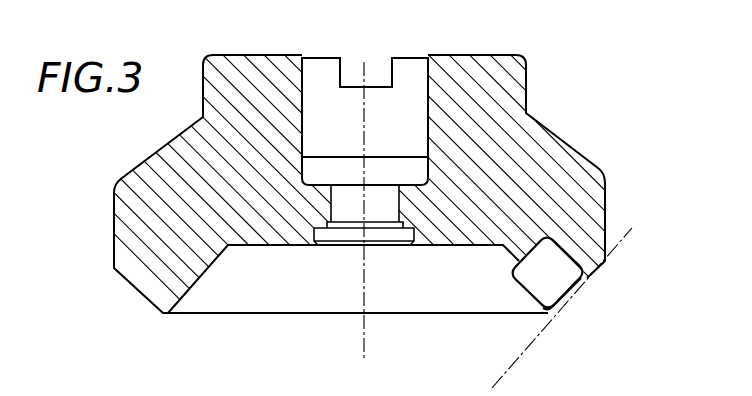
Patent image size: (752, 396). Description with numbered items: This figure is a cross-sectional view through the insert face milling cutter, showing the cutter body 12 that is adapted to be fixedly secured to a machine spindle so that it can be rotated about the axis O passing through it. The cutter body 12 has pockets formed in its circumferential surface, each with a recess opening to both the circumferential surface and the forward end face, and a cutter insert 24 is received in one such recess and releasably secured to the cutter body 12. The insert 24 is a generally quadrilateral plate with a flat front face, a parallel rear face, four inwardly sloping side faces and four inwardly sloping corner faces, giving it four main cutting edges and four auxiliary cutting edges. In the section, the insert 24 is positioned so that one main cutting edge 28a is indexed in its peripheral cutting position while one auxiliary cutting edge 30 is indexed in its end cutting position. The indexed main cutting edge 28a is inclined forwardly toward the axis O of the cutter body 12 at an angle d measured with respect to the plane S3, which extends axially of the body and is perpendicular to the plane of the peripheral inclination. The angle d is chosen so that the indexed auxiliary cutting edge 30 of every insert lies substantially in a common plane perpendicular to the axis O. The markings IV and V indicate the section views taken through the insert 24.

The cutter body 12 is at (568, 145).
The cutter insert 24 is at (578, 275).
The main cutting edge 28a is at (580, 293).
The auxiliary cutting edge 30 is at (547, 316).
The plane S3 is at (367, 73).
The axis O is at (364, 134).
The angle d is at (363, 340).
The section line IV is at (680, 365).
The section line V is at (642, 372).